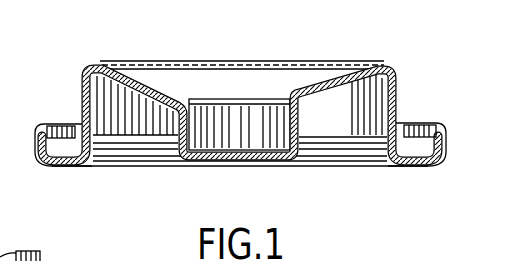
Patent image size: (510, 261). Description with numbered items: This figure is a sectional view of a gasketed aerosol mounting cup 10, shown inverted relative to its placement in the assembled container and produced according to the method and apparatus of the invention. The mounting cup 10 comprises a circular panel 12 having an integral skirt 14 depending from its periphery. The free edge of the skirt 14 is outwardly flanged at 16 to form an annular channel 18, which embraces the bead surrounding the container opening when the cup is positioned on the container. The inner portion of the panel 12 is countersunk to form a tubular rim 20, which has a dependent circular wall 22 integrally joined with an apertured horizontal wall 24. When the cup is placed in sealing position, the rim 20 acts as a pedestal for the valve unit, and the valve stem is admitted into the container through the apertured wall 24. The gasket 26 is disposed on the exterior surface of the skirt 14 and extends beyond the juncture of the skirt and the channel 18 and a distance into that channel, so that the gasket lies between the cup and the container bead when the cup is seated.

The mounting cup 10 is at (428, 96).
The circular panel 12 is at (350, 62).
The skirt 14 is at (88, 70).
The outward flange 16 is at (408, 128).
The annular channel 18 is at (441, 140).
The tubular rim 20 is at (305, 135).
The dependent circular wall 22 is at (180, 122).
The apertured horizontal wall 24 is at (208, 158).
The gasket 26 is at (80, 104).